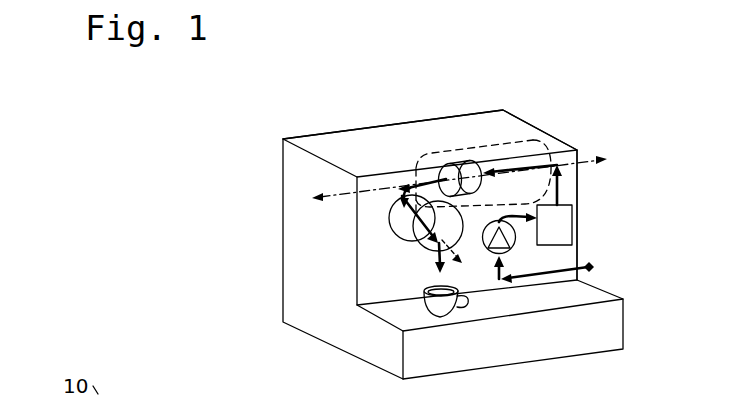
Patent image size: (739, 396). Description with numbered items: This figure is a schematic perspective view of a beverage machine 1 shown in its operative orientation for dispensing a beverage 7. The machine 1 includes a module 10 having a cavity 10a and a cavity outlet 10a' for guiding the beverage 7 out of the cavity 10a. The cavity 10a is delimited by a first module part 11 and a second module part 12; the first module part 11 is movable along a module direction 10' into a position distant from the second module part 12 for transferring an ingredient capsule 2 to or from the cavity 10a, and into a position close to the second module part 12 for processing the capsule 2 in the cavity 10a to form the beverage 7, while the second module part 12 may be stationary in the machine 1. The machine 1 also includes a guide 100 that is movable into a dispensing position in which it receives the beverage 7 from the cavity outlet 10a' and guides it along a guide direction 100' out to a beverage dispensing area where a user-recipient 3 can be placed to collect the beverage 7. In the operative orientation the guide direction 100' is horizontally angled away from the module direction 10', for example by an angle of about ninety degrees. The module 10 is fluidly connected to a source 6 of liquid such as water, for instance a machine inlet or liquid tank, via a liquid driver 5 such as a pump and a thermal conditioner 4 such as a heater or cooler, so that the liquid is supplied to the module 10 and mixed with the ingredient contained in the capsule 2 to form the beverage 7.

The machine 1 is at (183, 141).
The ingredient capsule 2 is at (462, 175).
The user-recipient 3 is at (467, 302).
The thermal conditioner 4 is at (565, 223).
The liquid driver 5 is at (487, 244).
The source of liquid 6 is at (590, 267).
The beverage 7 is at (437, 262).
The module 10 is at (430, 179).
The module direction 10' is at (452, 178).
The cavity 10a is at (502, 129).
The cavity outlet 10a' is at (369, 222).
The first module part 11 is at (425, 160).
The second module part 12 is at (528, 148).
The guide 100 is at (412, 232).
The guide direction 100' is at (372, 151).